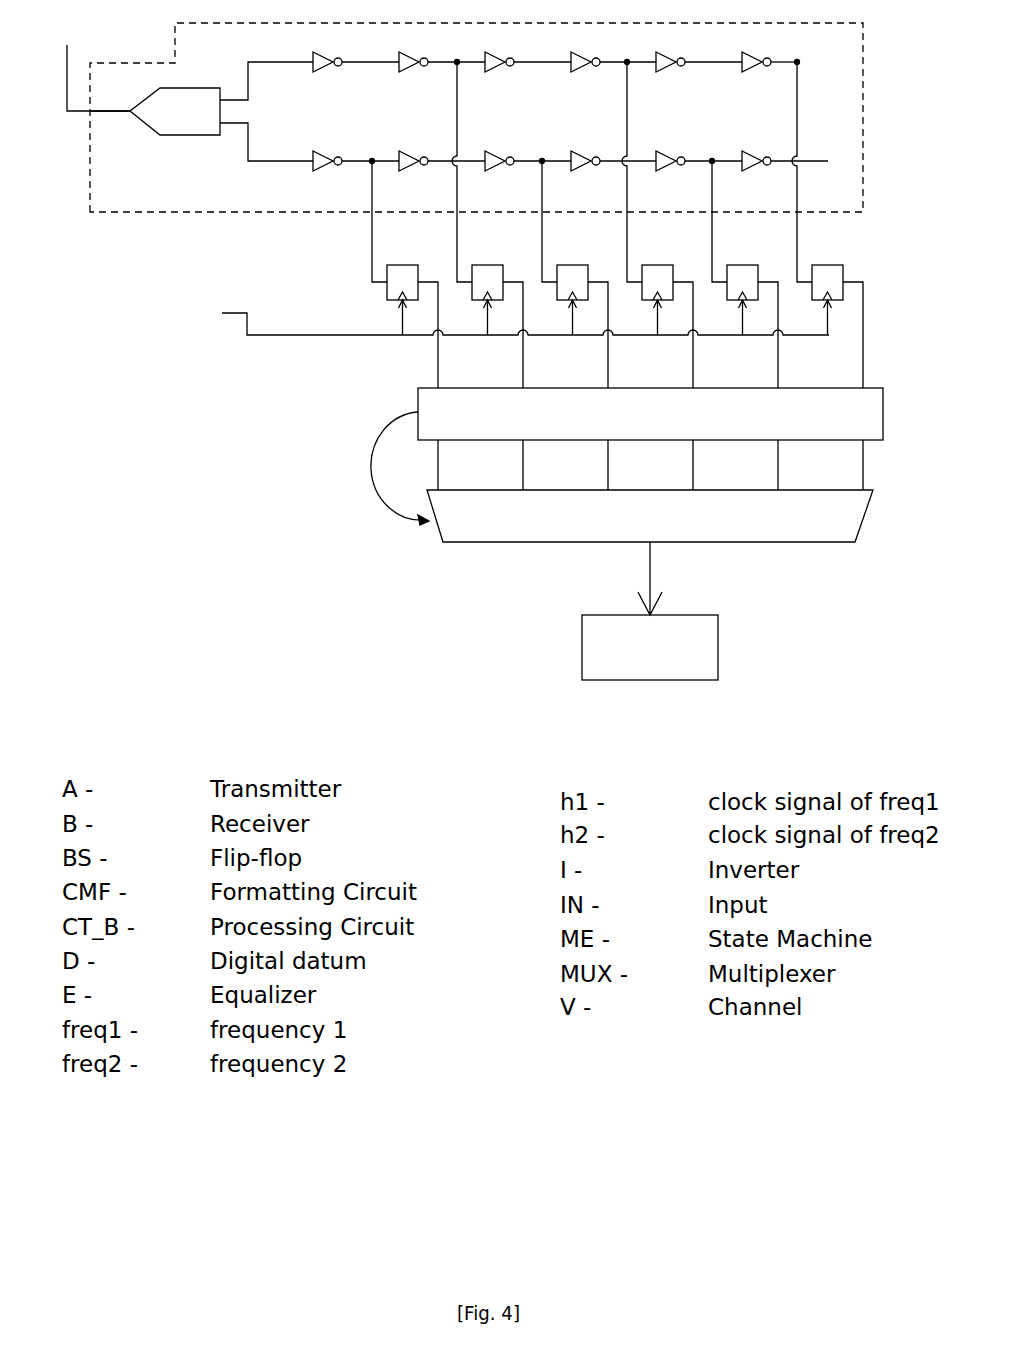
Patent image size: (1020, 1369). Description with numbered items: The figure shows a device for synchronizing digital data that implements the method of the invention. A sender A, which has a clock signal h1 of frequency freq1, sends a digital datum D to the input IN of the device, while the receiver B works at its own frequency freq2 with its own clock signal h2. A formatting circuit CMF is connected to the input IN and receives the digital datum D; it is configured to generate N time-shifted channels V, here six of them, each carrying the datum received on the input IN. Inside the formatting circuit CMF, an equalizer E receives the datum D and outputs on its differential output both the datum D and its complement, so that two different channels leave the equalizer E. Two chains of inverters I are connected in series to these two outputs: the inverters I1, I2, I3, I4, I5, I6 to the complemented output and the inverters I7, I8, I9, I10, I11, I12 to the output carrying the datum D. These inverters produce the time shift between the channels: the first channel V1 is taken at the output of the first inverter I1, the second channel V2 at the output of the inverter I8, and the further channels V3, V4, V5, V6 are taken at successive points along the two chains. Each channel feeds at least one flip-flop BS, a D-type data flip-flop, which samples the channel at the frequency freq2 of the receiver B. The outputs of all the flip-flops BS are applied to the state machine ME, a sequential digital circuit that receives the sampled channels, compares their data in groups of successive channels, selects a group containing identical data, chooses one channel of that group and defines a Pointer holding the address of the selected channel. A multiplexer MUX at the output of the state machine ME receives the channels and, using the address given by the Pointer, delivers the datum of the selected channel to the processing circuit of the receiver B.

The sender A is at (87, 65).
The receiver B is at (209, 142).
The flip-flop BS is at (625, 325).
The formatting circuit CMF is at (130, 212).
The digital datum D is at (181, 110).
The equalizer E is at (175, 111).
The frequency of the sender clock signal freq1 is at (112, 26).
The frequency of the receiver freq2 is at (490, 241).
The clock signal h1 is at (74, 26).
The clock signal of freq2 h2 is at (135, 154).
The inverter I is at (564, 111).
The first inverter I1 is at (349, 153).
The inverter I2 is at (435, 153).
The inverter I3 is at (521, 153).
The inverter I4 is at (606, 153).
The inverter I5 is at (691, 153).
The inverter I6 is at (777, 153).
The inverter I7 is at (349, 69).
The second inverter I8 is at (435, 69).
The inverter I9 is at (521, 69).
The inverter I10 is at (603, 69).
The inverter I11 is at (687, 69).
The inverter I12 is at (756, 69).
The input IN is at (101, 123).
The state machine ME is at (650, 439).
The multiplexer MUX is at (650, 552).
The channel V is at (580, 160).
The first channel V1 is at (368, 221).
The second channel V2 is at (451, 160).
The channel V3 is at (538, 221).
The channel V4 is at (621, 160).
The channel V5 is at (708, 221).
The channel V6 is at (791, 160).
The pointer Pointer is at (351, 468).